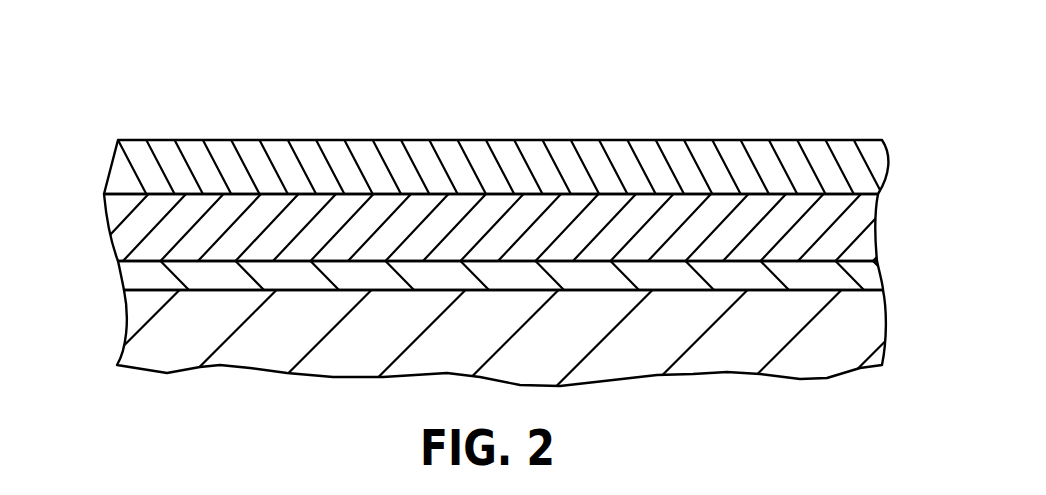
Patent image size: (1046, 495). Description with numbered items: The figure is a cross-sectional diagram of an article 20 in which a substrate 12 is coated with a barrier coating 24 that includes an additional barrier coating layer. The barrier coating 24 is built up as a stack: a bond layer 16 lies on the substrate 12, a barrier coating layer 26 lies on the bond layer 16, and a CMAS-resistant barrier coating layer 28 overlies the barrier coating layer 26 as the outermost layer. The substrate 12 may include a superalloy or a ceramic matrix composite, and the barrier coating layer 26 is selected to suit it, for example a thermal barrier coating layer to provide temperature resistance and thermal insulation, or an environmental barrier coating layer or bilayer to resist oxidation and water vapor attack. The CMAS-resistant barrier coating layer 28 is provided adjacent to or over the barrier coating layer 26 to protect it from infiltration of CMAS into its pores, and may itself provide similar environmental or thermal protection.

The article 20 is at (507, 221).
The substrate 12 is at (140, 327).
The bond layer 16 is at (140, 277).
The barrier coating 24 is at (507, 214).
The barrier coating layer 26 is at (130, 229).
The CMAS-resistant barrier coating layer 28 is at (130, 168).